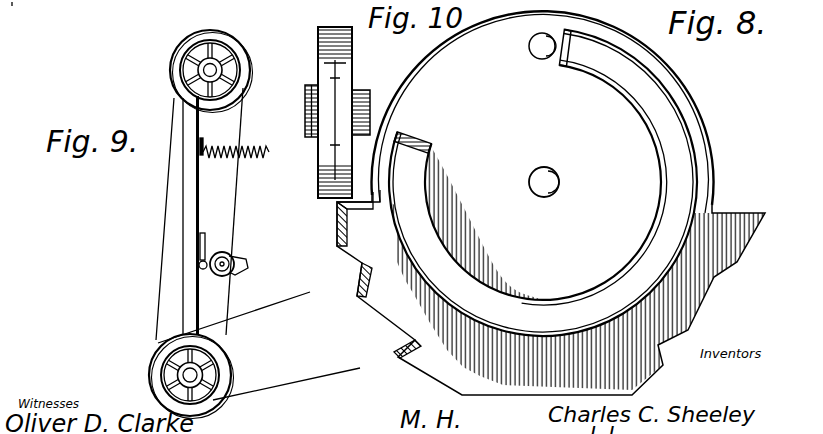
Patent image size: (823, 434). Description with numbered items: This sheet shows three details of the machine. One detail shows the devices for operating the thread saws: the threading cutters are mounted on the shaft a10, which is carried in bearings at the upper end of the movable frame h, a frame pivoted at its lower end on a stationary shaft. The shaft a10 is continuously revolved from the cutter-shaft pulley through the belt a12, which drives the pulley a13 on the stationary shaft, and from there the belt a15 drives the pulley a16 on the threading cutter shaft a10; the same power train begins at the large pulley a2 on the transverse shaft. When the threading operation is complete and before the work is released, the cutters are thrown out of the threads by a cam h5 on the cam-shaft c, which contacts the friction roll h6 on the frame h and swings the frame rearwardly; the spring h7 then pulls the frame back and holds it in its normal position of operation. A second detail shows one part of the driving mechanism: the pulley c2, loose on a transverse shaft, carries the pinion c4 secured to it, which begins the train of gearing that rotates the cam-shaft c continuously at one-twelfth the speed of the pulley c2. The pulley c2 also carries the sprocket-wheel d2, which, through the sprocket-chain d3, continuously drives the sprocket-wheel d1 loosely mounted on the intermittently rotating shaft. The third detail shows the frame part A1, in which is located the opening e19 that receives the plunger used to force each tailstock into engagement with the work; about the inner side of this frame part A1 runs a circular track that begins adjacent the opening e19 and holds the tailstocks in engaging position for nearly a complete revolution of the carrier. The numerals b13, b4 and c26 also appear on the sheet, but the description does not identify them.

In FIG. 9, the lever arm b13 is at (25, 15).
In FIG. 9, the sprocket-wheel d1 is at (88, 0).
In FIG. 9, the sprocket-chain d3 is at (107, 0).
In FIG. 9, the sprocket-wheel d2 is at (96, 46).
In FIG. 9, the pulley a16 is at (212, 61).
In FIG. 9, the large pulley a2 is at (250, 68).
In FIG. 9, the threading cutter shaft a10 is at (208, 72).
In FIG. 9, the lower pulley b4 is at (181, 376).
In FIG. 9, the pulley a13 is at (177, 372).
In FIG. 9, the belt a15 is at (236, 212).
In FIG. 9, the movable frame h is at (195, 186).
In FIG. 9, the belt a12 is at (286, 388).
In FIG. 9, the spring h7 is at (248, 158).
In FIG. 9, the friction roll h6 is at (204, 272).
In FIG. 9, the cam h5 is at (247, 257).
In FIG. 9, the cam-shaft c is at (222, 263).
In FIG. 10, the pulley c2 is at (323, 58).
In FIG. 10, the pinion c4 is at (370, 100).
In FIG. 8, the frame part A1 is at (551, 203).
In FIG. 8, the cam groove c26 is at (630, 80).
In FIG. 8, the opening e19 is at (537, 44).